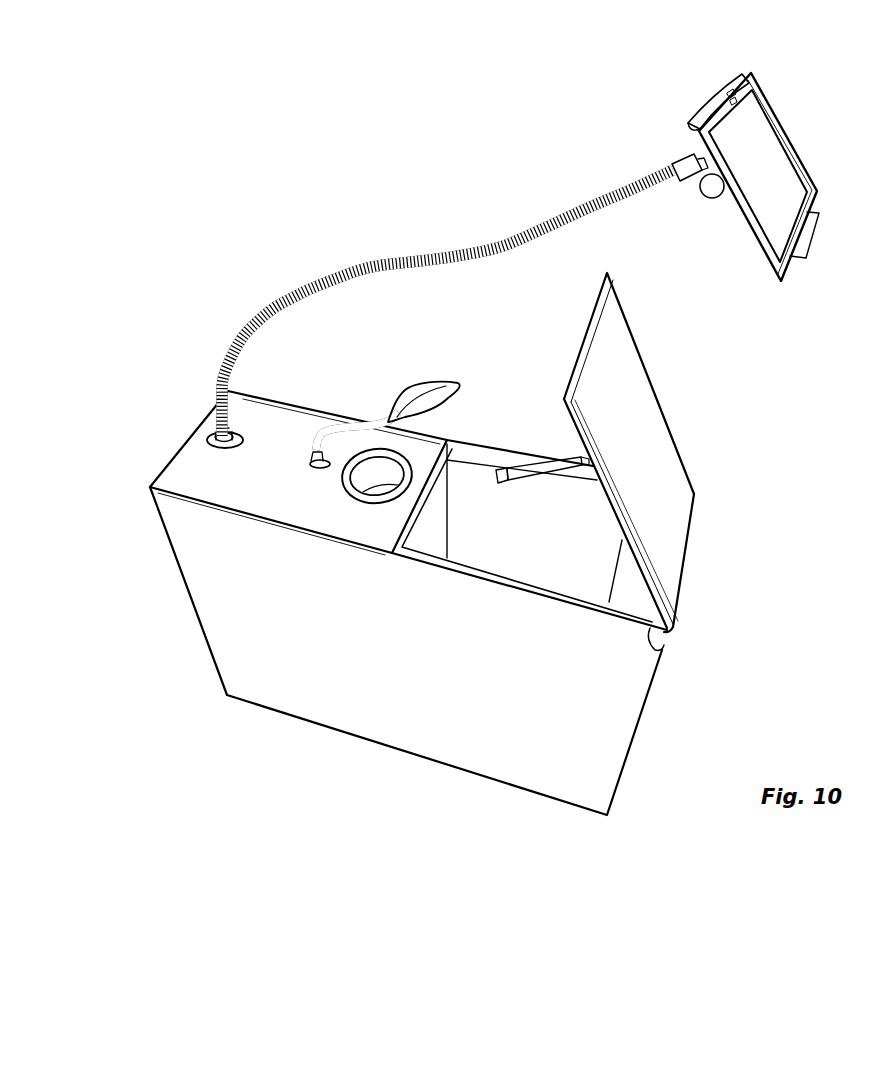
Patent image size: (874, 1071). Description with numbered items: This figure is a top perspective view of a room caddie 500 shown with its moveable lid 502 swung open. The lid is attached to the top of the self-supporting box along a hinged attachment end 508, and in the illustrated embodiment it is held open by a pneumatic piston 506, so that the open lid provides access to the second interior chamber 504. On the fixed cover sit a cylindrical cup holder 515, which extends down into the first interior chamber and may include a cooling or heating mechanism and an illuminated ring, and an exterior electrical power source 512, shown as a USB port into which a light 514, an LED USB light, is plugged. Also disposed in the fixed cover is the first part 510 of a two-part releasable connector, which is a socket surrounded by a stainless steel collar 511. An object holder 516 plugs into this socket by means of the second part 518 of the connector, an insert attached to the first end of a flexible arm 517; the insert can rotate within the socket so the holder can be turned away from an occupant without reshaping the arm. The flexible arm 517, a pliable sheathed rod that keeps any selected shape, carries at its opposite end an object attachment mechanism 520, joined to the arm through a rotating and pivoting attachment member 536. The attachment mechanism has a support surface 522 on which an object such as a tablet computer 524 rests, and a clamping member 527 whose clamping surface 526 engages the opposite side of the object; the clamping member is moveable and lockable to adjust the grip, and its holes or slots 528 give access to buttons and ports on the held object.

The room caddie 500 is at (835, 472).
The lid 502 is at (643, 395).
The second interior chamber 504 is at (482, 482).
The pneumatic piston 506 is at (550, 470).
The hinged attachment end 508 is at (660, 648).
The first part of the two-part releasable connector 510 is at (204, 450).
The stainless steel collar 511 is at (242, 426).
The exterior electrical power source 512 is at (314, 470).
The light 514 is at (430, 391).
The cylindrical cup holder 515 is at (371, 507).
The object holder 516 is at (341, 272).
The flexible arm 517 is at (402, 266).
The second part of the two-part releasable connector 518 is at (214, 428).
The object attachment mechanism 520 is at (812, 251).
The support surface 522 is at (813, 230).
The tablet computer 524 is at (810, 178).
The clamping surface 526 is at (710, 103).
The clamping member 527 is at (696, 128).
The holes or slots 528 is at (731, 104).
The rotating and pivoting attachment member 536 is at (710, 199).